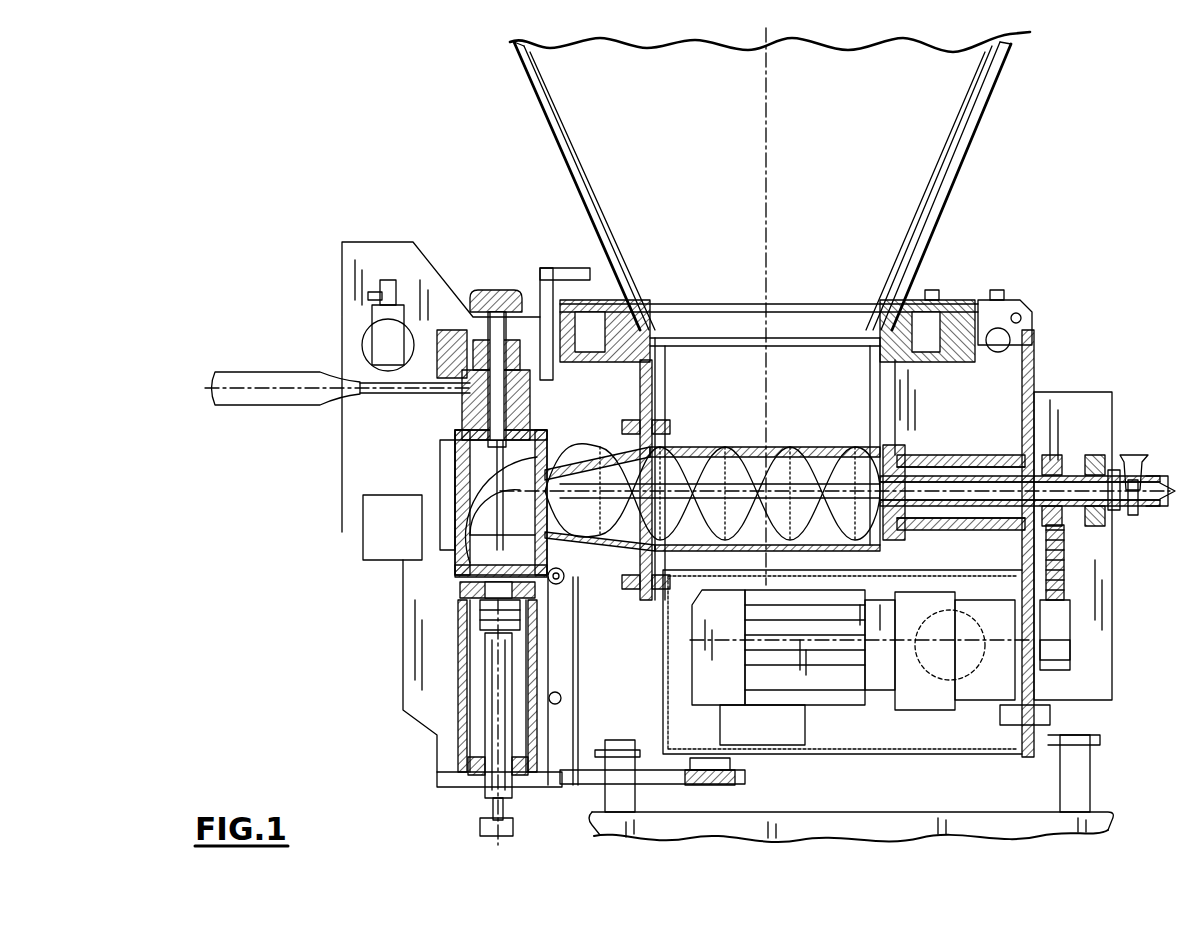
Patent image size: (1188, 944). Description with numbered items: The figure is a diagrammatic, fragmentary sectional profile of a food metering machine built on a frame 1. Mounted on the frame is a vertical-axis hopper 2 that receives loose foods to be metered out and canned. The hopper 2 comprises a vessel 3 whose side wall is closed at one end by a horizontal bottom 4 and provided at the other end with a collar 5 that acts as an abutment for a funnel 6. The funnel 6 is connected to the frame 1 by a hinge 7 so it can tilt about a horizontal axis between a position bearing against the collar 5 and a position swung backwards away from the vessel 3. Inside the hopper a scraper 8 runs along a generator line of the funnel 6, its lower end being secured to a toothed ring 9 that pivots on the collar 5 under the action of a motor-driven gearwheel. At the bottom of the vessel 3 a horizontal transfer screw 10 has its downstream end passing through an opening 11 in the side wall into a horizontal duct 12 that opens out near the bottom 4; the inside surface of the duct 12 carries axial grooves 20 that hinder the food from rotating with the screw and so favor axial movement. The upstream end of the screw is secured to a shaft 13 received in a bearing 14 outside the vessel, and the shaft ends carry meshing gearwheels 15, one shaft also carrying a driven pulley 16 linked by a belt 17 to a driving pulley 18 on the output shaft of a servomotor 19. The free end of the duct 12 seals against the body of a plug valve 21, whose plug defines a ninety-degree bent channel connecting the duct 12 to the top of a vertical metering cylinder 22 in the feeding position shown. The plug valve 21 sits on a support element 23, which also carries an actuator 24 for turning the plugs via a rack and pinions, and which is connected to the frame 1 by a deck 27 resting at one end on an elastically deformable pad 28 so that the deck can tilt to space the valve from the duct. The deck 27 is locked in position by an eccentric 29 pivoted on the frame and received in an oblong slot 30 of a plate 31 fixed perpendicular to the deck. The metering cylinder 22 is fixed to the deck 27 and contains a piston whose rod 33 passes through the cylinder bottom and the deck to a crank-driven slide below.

The frame 1 is at (1030, 760).
The hopper 2 is at (590, 243).
The vessel 3 is at (920, 385).
The horizontal bottom 4 is at (720, 488).
The collar 5 is at (560, 300).
The funnel 6 is at (1000, 102).
The hinge 7 is at (1010, 300).
The scraper 8 is at (1024, 40).
The toothed ring 9 is at (960, 300).
The transfer screw 10 is at (800, 455).
The opening 11 is at (660, 455).
The horizontal duct 12 is at (570, 448).
The shaft 13 is at (965, 490).
The bearing 14 is at (940, 455).
The gearwheel 15 is at (1100, 456).
The driven pulley 16 is at (1080, 520).
The belt 17 is at (1070, 590).
The driving pulley 18 is at (1100, 690).
The servomotor 19 is at (850, 690).
The axial groove 20 is at (600, 448).
The plug valve 21 is at (462, 405).
The metering cylinder 22 is at (455, 668).
The support element 23 is at (345, 395).
The actuator 24 is at (372, 335).
The deck 27 is at (590, 782).
The elastically deformable pad 28 is at (715, 790).
The eccentric 29 is at (565, 580).
The slot 30 is at (560, 585).
The plate 31 is at (575, 704).
The rod 33 is at (495, 732).